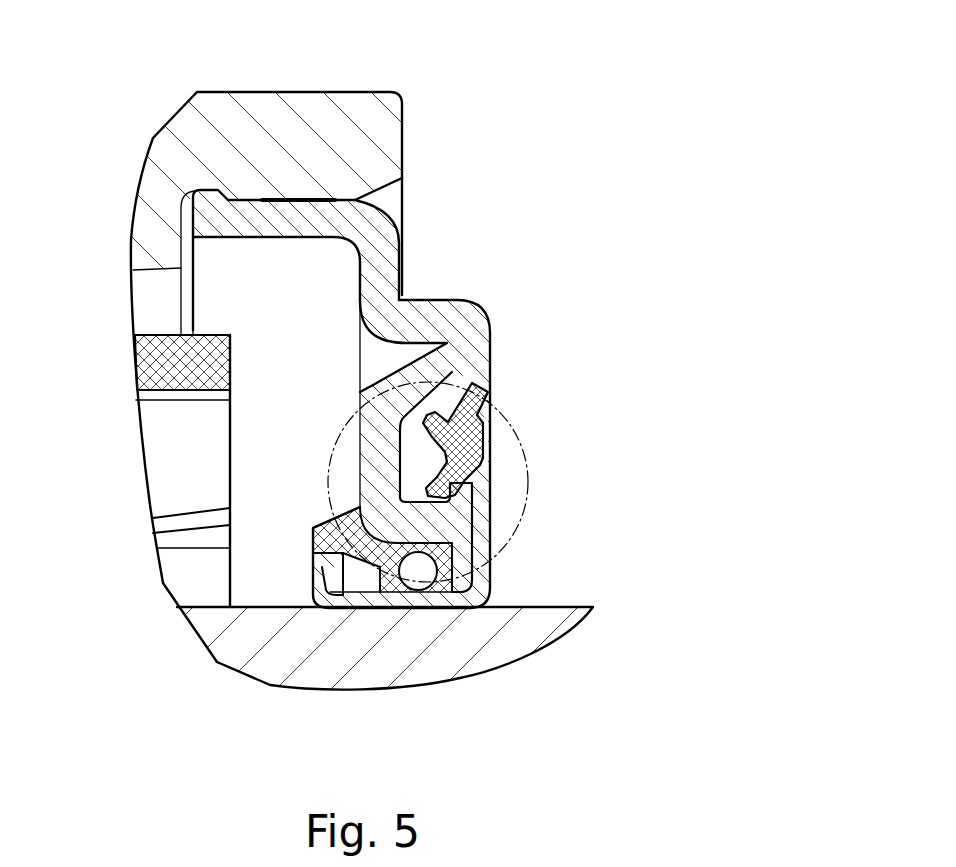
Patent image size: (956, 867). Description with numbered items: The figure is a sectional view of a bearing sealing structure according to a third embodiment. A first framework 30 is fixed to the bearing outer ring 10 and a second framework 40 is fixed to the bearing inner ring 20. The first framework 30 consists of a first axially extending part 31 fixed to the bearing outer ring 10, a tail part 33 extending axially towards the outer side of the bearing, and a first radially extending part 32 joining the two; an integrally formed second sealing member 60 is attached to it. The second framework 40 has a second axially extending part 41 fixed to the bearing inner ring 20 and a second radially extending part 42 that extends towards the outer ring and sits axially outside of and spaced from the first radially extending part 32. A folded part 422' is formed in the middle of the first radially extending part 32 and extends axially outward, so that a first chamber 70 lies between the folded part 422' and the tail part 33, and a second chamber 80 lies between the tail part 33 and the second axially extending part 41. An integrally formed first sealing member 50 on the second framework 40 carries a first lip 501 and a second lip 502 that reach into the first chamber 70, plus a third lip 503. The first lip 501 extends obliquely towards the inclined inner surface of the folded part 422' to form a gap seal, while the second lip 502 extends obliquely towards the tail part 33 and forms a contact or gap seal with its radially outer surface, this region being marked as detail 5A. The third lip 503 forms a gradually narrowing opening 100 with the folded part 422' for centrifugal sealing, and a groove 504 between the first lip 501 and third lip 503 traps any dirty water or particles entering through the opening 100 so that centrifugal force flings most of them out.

The bearing outer ring 10 is at (187, 128).
The bearing inner ring 20 is at (546, 640).
The first framework 30 is at (215, 222).
The first axially extending part 31 is at (302, 222).
The first radially extending part 32 is at (430, 440).
The tail part 33 is at (408, 597).
The second framework 40 is at (490, 598).
The second axially extending part 41 is at (453, 602).
The second radially extending part 42 is at (474, 522).
The folded part 422' is at (491, 328).
The first sealing member 50 is at (470, 432).
The first lip 501 is at (420, 405).
The second lip 502 is at (478, 480).
The third lip 503 is at (445, 413).
The groove 504 is at (486, 427).
The second sealing member 60 is at (378, 590).
The first chamber 70 is at (432, 414).
The second chamber 80 is at (350, 593).
The gradually narrowing opening 100 is at (488, 388).
The detail region of Fig. 5A is at (527, 507).